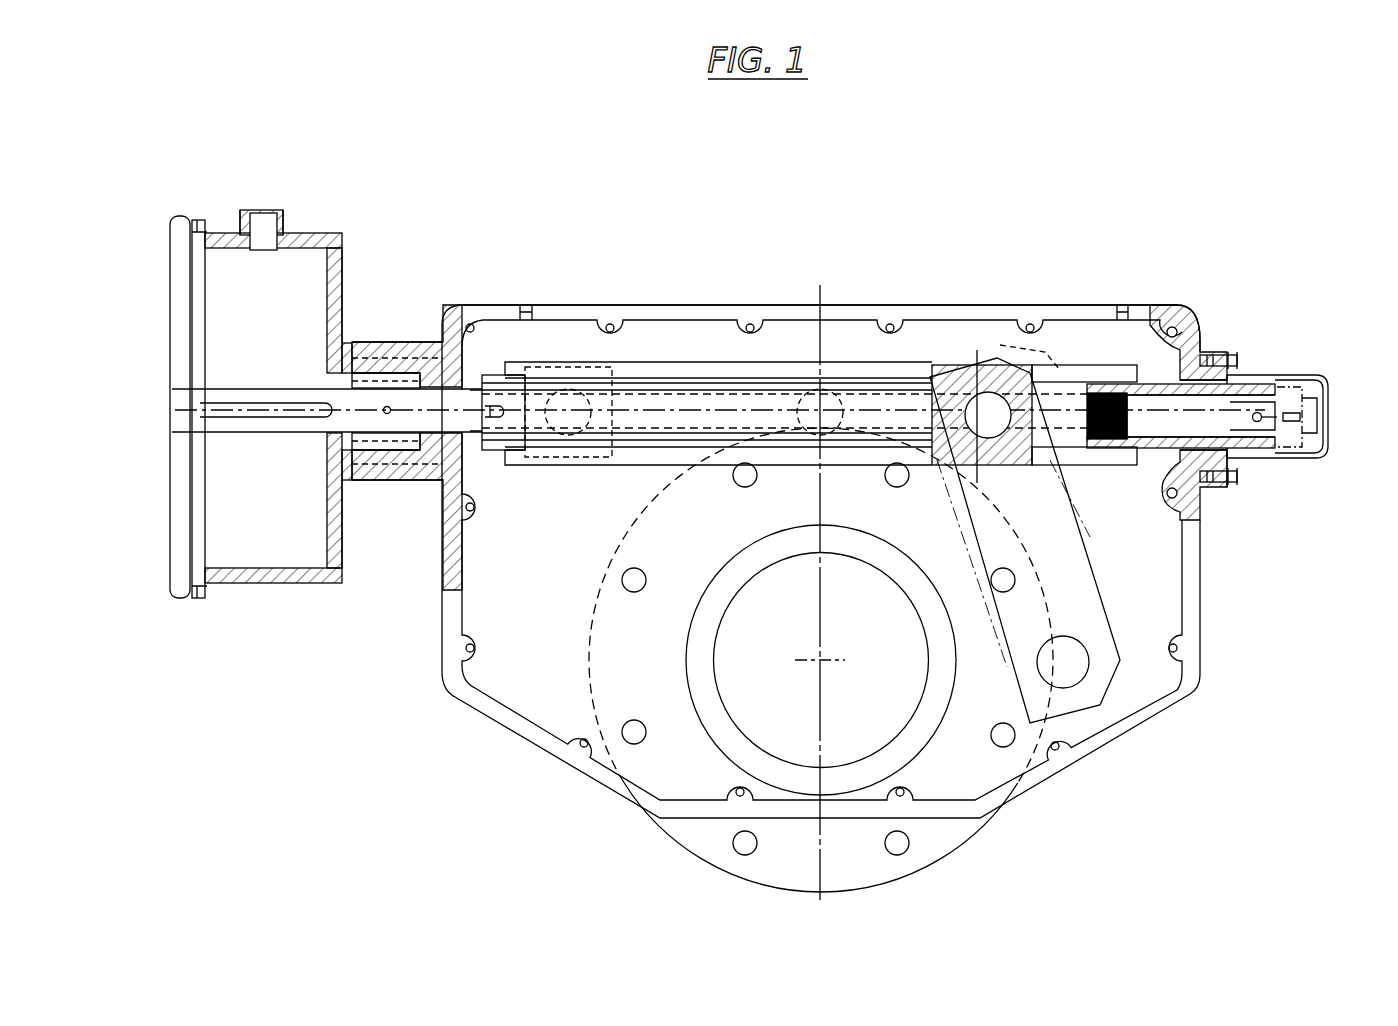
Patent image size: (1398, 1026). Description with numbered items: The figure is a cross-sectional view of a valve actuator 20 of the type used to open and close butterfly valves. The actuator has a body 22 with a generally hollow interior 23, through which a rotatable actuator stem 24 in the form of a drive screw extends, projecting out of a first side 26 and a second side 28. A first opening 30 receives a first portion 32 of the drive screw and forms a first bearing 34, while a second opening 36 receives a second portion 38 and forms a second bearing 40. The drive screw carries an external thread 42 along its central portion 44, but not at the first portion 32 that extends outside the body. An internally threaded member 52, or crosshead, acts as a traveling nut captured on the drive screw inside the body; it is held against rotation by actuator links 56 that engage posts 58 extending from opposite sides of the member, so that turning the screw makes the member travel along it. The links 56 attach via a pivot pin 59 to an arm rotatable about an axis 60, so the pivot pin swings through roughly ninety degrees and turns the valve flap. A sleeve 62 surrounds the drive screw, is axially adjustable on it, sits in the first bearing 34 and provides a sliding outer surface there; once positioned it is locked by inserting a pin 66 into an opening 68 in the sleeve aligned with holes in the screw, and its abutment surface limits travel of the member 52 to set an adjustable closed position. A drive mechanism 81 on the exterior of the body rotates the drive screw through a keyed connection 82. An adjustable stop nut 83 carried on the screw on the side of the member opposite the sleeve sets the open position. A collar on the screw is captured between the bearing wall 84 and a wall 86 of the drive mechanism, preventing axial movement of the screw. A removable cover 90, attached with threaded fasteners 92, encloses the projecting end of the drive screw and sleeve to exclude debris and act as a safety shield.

The valve actuator 20 is at (1230, 222).
The body 22 is at (987, 313).
The hollow interior 23 is at (708, 335).
The actuator stem 24 is at (458, 378).
The first side 26 is at (1240, 463).
The second side 28 is at (418, 398).
The first opening 30 is at (1200, 403).
The first portion 32 is at (1183, 340).
The first bearing 34 is at (1172, 450).
The second opening 36 is at (405, 458).
The second portion 38 is at (442, 395).
The second bearing 40 is at (452, 445).
The external thread 42 is at (480, 470).
The central portion 44 is at (886, 395).
The internally threaded member 52 is at (596, 356).
The actuator links 56 is at (1080, 610).
The posts 58 is at (960, 372).
The pivot pin 59 is at (1072, 676).
The axis 60 is at (818, 664).
The sleeve 62 is at (1098, 383).
The pin 66 is at (1259, 414).
The opening 68 is at (1283, 412).
The drive mechanism 81 is at (250, 585).
The keyed connection 82 is at (232, 412).
The adjustable stop nut 83 is at (496, 360).
The bearing wall 84 is at (428, 450).
The wall of the drive mechanism 86 is at (383, 343).
The removable cover 90 is at (1300, 463).
The threaded fasteners 92 is at (1225, 357).